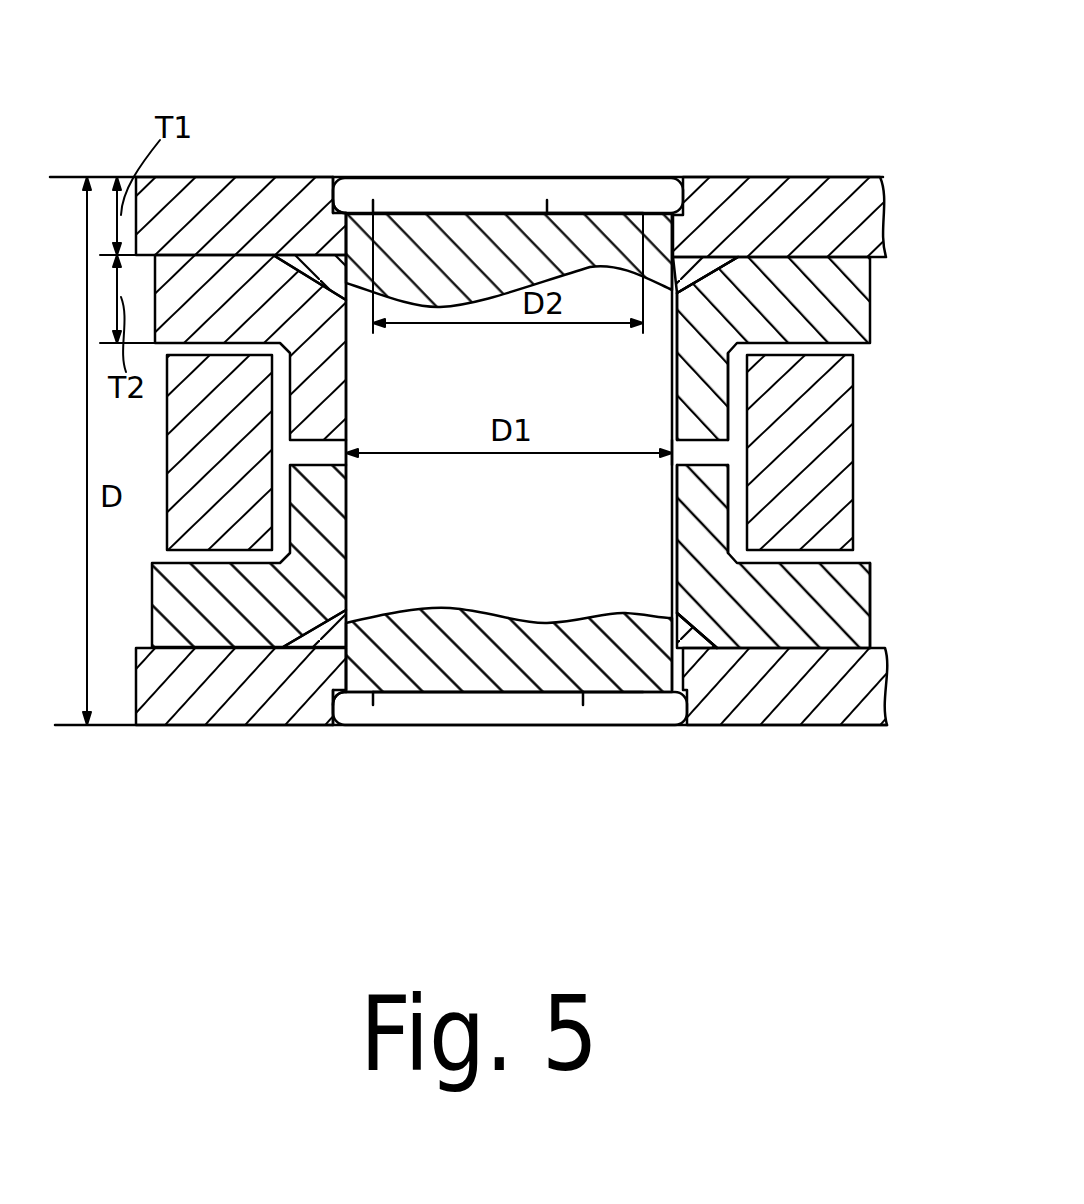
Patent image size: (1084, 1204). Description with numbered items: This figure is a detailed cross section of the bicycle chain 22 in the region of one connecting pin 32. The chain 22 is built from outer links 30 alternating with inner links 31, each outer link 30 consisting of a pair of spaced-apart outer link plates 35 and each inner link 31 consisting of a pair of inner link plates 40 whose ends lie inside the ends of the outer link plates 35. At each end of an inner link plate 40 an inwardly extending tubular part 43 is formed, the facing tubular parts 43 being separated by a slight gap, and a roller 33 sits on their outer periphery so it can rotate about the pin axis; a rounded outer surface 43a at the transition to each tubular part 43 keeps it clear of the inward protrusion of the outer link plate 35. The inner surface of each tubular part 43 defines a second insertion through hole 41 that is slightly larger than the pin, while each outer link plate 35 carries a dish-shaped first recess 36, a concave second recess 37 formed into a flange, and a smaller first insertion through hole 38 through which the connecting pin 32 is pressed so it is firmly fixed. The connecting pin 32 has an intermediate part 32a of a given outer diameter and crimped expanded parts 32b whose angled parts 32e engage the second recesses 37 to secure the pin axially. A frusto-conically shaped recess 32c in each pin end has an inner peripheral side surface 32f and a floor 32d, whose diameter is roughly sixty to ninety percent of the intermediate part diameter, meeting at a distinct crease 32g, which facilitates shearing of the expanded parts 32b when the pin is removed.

The chain 22 is at (553, 137).
The outer link 30 is at (780, 200).
The inner link 31 is at (867, 577).
The connecting pin 32 is at (643, 200).
The intermediate part 32a is at (447, 545).
The expanded part 32b is at (680, 200).
The frusto-conically shaped recess 32c is at (462, 187).
The floor 32d is at (552, 187).
The angled part 32e is at (310, 182).
The inner peripheral side surface 32f is at (375, 182).
The crease 32g is at (383, 690).
The roller 33 is at (832, 445).
The outer link plate 35 is at (843, 200).
The first recess 36 is at (318, 182).
The second recess 37 is at (353, 182).
The first insertion through hole 38 is at (397, 205).
The inner link plate 40 is at (847, 305).
The second insertion through hole 41 is at (688, 388).
The tubular part 43 is at (690, 345).
The rounded outer surface 43a is at (700, 250).